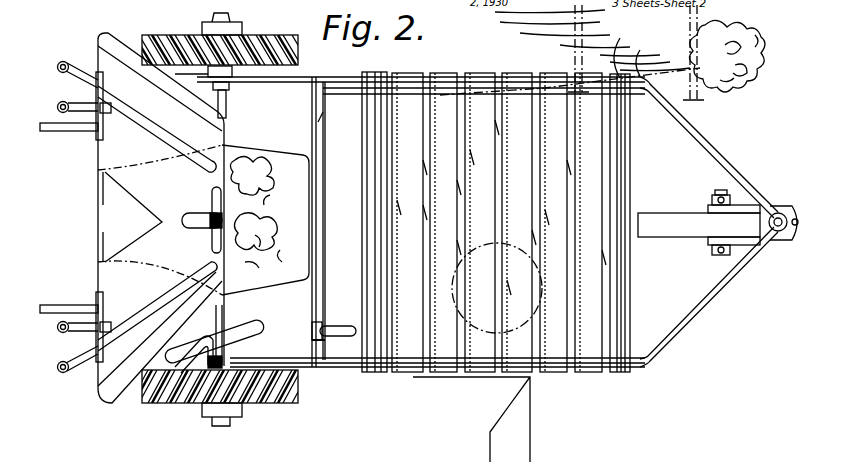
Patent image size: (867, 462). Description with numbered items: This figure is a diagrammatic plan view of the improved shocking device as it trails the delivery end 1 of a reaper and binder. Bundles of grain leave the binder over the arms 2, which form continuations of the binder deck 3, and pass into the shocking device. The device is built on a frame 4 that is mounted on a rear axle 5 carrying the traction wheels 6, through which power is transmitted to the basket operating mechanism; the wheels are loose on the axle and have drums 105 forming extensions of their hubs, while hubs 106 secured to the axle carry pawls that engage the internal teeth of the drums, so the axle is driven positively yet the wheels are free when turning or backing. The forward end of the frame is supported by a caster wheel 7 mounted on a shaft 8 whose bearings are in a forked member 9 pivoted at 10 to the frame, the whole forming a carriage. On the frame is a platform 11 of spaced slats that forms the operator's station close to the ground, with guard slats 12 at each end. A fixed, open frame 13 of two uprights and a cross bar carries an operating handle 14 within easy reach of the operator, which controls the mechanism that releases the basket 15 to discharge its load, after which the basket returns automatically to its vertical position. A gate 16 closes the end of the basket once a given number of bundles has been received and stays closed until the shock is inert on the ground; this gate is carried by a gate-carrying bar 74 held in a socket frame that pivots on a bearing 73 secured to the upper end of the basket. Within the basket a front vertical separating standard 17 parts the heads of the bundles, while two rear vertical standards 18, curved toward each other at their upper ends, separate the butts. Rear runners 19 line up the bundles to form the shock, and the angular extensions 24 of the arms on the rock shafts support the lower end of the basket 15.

The delivery end of reaper and binder 1 is at (508, 155).
The arms 2 is at (470, 88).
The deck 3 is at (648, 12).
The frame 4 is at (340, 80).
The rear axle 5 is at (226, 101).
The traction wheels 6 is at (298, 54).
The caster wheel 7 is at (676, 230).
The shaft 8 is at (718, 255).
The forked member 9 is at (735, 192).
The pivot 10 is at (775, 210).
The platform 11 is at (416, 78).
The guard slats 12 is at (375, 78).
The fixed open frame 13 is at (323, 116).
The operating handle 14 is at (342, 326).
The basket 15 is at (108, 33).
The gate 16 is at (258, 334).
The front vertical separating standard 17 is at (221, 213).
The rear vertical standards 18 is at (104, 175).
The rear runners 19 is at (66, 75).
The angular extensions 24 is at (60, 131).
The bearing 73 is at (195, 340).
The gate-carrying bar 74 is at (207, 366).
The drums 105 is at (242, 28).
The hubs 106 is at (230, 18).